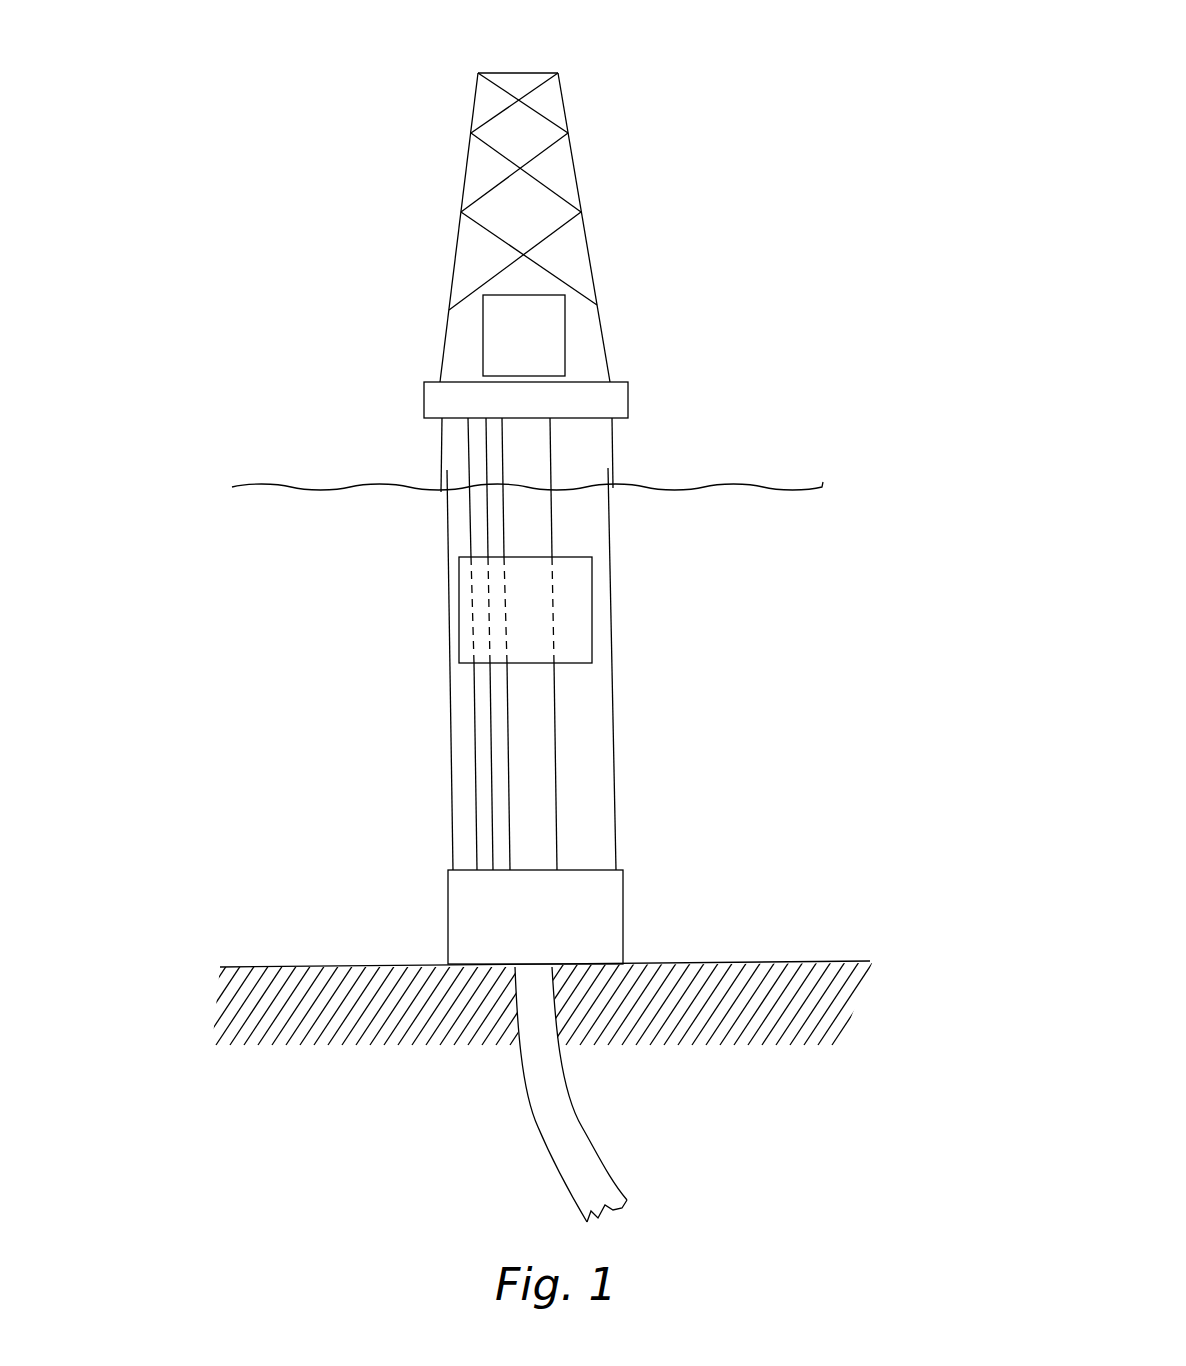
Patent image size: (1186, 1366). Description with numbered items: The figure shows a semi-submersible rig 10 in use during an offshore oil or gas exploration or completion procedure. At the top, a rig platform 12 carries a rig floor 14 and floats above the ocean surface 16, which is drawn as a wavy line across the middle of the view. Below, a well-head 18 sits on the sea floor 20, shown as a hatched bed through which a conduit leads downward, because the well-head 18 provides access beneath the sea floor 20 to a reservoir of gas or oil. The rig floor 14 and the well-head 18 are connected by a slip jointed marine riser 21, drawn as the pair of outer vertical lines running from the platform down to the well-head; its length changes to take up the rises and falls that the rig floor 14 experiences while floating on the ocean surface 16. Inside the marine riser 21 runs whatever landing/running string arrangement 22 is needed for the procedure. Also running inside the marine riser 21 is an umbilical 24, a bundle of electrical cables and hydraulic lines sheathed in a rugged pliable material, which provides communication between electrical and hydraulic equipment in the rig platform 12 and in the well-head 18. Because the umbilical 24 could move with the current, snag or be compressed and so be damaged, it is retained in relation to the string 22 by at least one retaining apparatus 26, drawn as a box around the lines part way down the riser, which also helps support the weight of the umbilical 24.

The semi-submersible rig 10 is at (775, 83).
The rig platform 12 is at (600, 214).
The rig floor 14 is at (545, 343).
The ocean surface 16 is at (768, 486).
The well-head 18 is at (557, 935).
The sea floor 20 is at (765, 960).
The slip jointed marine riser 21 is at (447, 512).
The landing/running string arrangement 22 is at (535, 742).
The umbilical 24 is at (480, 540).
The retaining apparatus 26 is at (579, 613).